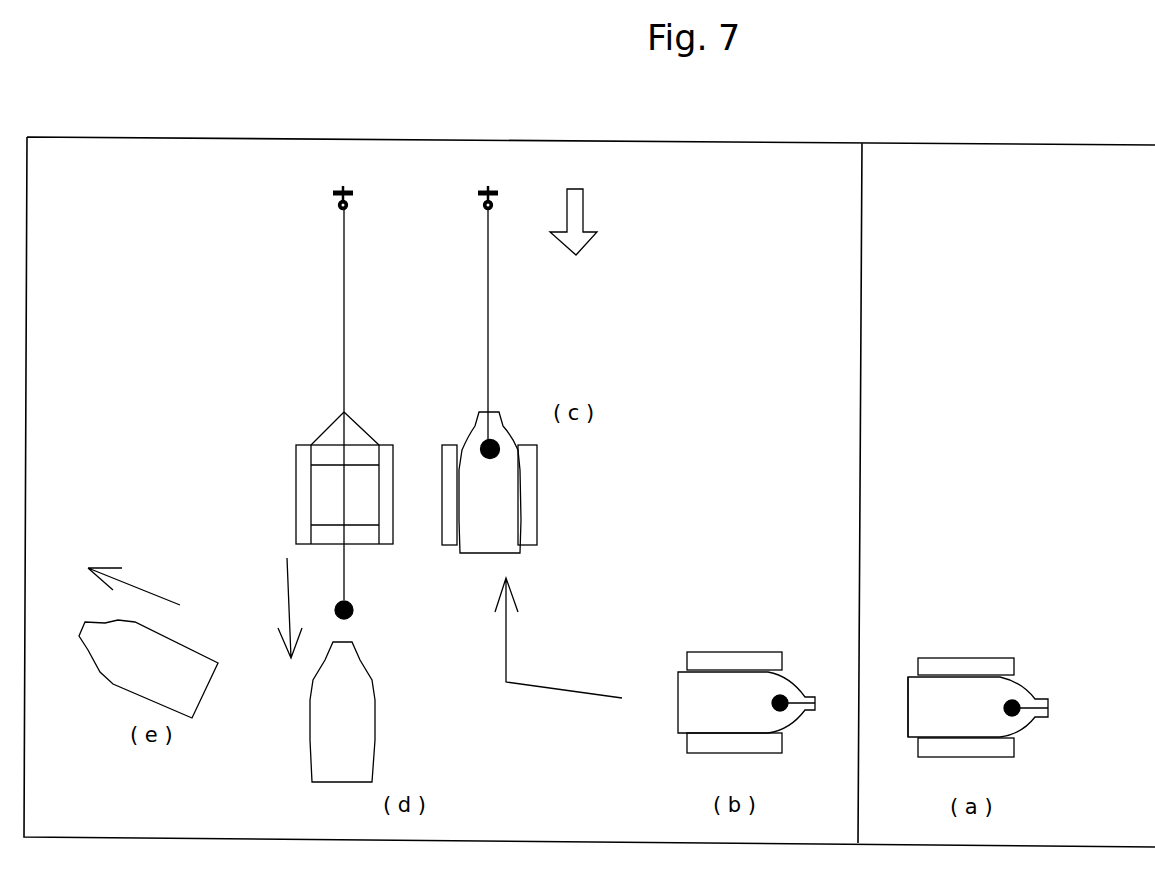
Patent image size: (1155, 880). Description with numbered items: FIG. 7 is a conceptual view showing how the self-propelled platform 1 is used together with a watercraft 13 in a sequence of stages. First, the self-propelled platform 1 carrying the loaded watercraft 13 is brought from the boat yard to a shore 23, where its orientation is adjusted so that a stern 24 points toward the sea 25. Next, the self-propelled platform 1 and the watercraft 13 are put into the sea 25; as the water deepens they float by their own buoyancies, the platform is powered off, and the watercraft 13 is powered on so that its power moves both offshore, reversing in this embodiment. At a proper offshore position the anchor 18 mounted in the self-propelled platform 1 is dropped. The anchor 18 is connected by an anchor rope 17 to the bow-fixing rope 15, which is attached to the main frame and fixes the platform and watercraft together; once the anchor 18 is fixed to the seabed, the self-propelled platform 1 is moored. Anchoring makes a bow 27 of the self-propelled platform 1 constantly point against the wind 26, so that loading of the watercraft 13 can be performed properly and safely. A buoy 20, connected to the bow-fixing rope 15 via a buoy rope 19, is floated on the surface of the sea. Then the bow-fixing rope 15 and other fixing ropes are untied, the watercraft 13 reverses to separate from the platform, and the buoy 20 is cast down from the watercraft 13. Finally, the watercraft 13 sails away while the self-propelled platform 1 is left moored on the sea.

The self-propelled platform 1 is at (296, 469).
The watercraft 13 is at (375, 697).
The bow-fixing rope 15 is at (352, 421).
The anchor rope 17 is at (344, 283).
The anchor 18 is at (350, 180).
The buoy rope 19 is at (344, 562).
The buoy 20 is at (353, 606).
The shore 23 is at (1049, 221).
The stern 24 is at (908, 690).
The sea 25 is at (786, 217).
The wind 26 is at (583, 210).
The bow 27 is at (490, 412).